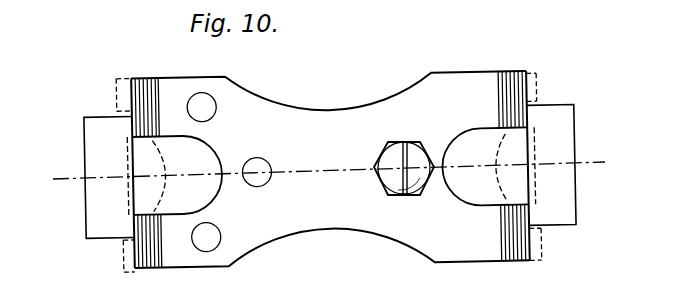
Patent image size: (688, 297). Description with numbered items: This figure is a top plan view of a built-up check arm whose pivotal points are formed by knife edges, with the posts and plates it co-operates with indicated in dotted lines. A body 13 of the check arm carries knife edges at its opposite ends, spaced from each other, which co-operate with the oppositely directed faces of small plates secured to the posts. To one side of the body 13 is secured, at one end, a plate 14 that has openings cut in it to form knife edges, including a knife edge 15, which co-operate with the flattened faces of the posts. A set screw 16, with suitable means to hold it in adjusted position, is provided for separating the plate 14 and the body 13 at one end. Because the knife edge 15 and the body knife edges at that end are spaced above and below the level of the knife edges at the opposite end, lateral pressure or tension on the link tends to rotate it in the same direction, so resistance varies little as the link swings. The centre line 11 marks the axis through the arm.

The axis / section line 11 is at (325, 173).
The body of the check arm 13 is at (133, 97).
The plate 14 is at (91, 229).
The knife edge 15 is at (503, 173).
The set screw 16 is at (374, 167).